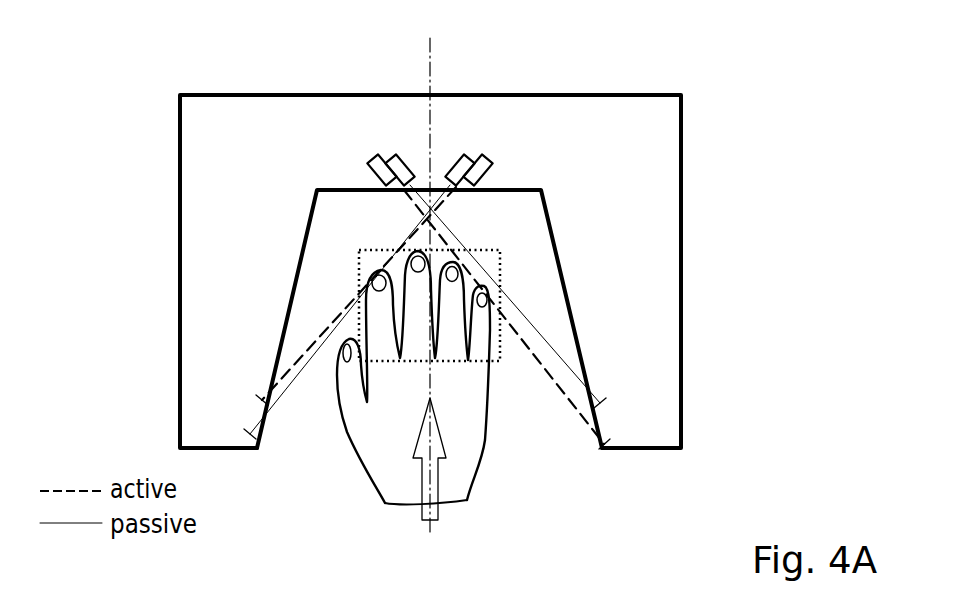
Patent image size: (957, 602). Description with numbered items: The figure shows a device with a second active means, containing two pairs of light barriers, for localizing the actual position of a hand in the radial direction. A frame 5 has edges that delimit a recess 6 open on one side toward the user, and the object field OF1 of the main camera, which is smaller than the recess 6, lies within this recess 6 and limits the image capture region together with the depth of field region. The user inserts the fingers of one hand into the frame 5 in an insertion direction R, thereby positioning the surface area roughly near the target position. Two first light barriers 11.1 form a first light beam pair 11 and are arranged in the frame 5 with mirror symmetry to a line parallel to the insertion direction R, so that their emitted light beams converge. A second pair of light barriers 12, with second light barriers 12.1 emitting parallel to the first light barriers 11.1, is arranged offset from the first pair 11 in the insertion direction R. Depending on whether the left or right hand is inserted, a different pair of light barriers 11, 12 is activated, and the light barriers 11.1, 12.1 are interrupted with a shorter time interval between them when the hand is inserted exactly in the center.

The frame 5 is at (627, 318).
The recess 6 is at (508, 220).
The first light beam pair 11 is at (378, 154).
The second pair of light barriers 12 is at (462, 155).
The first light barrier 11.1 is at (372, 168).
The second light barrier 12.1 is at (393, 178).
The object field OF1 is at (500, 333).
The insertion direction R is at (433, 485).